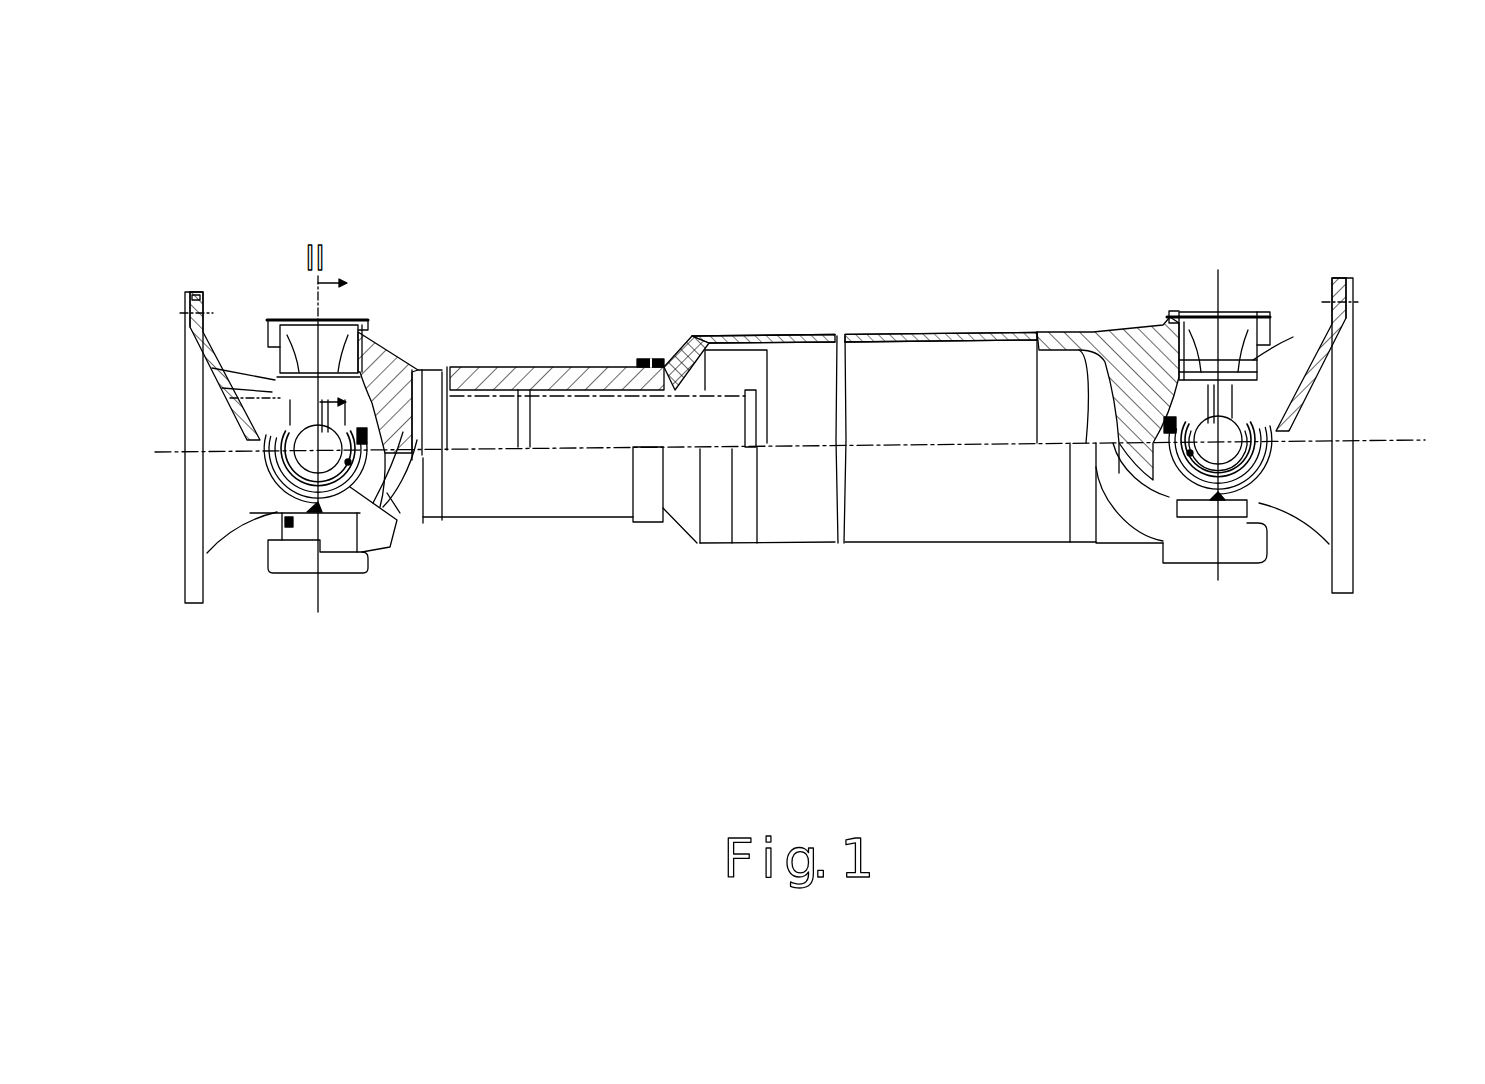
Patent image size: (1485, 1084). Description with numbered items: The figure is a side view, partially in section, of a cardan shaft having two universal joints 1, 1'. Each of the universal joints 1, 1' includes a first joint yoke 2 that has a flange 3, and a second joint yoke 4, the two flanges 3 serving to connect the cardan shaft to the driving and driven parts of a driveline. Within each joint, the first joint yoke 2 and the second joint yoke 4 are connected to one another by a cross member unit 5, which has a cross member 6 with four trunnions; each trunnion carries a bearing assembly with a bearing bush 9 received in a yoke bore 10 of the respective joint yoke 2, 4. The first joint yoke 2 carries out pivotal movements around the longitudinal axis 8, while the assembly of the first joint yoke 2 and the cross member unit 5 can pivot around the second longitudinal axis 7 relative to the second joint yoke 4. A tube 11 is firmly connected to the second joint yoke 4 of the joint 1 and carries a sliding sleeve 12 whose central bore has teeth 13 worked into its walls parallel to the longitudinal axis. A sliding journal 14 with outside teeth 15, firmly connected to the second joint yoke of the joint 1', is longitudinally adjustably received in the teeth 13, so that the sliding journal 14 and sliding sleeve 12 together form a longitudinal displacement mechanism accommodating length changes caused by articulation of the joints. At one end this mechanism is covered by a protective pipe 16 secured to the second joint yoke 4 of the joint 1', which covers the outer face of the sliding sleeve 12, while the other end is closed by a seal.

The universal joint 1 is at (327, 387).
The universal joint 1' is at (1165, 320).
The first joint yoke 2 is at (278, 497).
The flange 3 is at (200, 546).
The second joint yoke 4 is at (395, 515).
The cross member unit 5 is at (275, 335).
The cross member 6 is at (1238, 390).
The second longitudinal axis 7 is at (1215, 573).
The longitudinal axis 8 is at (1225, 445).
The bearing bush 9 is at (1228, 332).
The yoke bore 10 is at (1180, 316).
The tube 11 is at (907, 335).
The sliding sleeve 12 is at (577, 396).
The teeth 13 is at (480, 396).
The sliding journal 14 is at (714, 413).
The outside teeth 15 is at (697, 390).
The protective pipe 16 is at (537, 367).